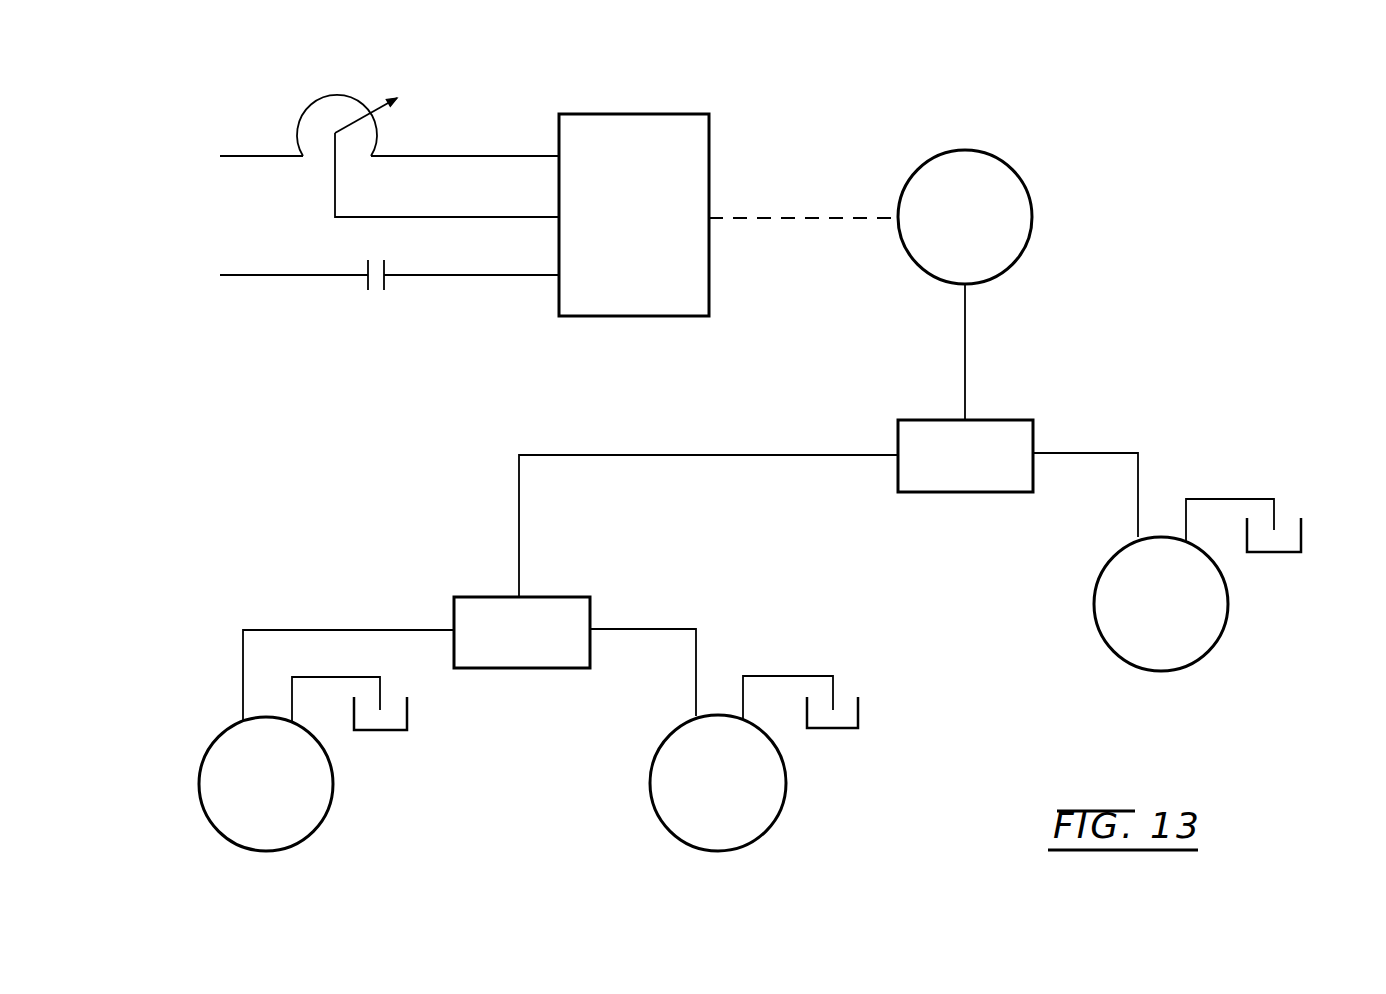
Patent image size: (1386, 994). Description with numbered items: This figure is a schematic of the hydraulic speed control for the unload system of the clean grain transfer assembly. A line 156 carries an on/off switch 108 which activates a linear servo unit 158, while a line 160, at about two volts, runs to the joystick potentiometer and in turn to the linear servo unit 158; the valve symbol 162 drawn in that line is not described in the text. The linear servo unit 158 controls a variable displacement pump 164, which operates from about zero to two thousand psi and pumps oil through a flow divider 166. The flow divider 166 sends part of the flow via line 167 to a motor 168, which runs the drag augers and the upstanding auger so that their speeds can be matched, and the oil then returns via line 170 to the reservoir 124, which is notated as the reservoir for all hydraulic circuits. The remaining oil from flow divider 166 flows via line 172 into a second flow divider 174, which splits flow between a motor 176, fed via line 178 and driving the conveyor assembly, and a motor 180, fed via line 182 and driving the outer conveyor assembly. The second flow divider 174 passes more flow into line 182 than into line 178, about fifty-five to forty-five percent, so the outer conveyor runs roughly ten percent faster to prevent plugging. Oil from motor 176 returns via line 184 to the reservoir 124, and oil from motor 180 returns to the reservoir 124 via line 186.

The on/off switch 108 is at (378, 291).
The reservoir 124 is at (1301, 535).
The line 156 is at (302, 277).
The linear servo unit 158 is at (629, 114).
The line 160 is at (268, 156).
The variable valve 162 is at (345, 98).
The variable displacement pump 164 is at (953, 150).
The flow divider 166 is at (1005, 420).
The line 167 is at (1097, 453).
The motor 168 is at (1229, 619).
The line 170 is at (1220, 499).
The line 172 is at (735, 455).
The second flow divider 174 is at (563, 597).
The motor 176 is at (650, 781).
The line 178 is at (643, 629).
The motor 180 is at (233, 727).
The line 182 is at (303, 630).
The line 184 is at (783, 676).
The line 186 is at (352, 677).